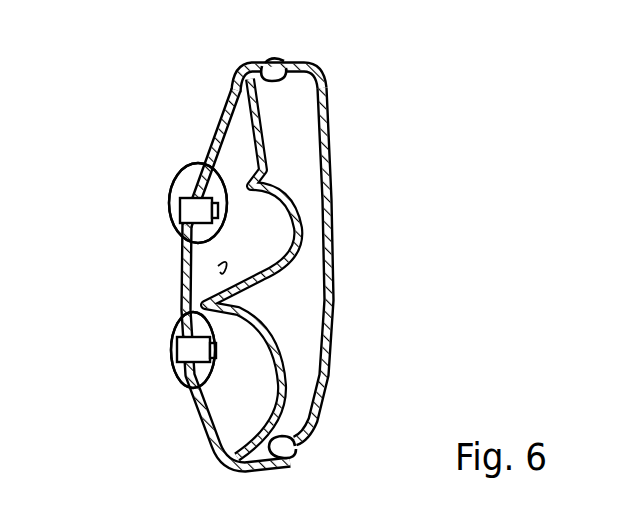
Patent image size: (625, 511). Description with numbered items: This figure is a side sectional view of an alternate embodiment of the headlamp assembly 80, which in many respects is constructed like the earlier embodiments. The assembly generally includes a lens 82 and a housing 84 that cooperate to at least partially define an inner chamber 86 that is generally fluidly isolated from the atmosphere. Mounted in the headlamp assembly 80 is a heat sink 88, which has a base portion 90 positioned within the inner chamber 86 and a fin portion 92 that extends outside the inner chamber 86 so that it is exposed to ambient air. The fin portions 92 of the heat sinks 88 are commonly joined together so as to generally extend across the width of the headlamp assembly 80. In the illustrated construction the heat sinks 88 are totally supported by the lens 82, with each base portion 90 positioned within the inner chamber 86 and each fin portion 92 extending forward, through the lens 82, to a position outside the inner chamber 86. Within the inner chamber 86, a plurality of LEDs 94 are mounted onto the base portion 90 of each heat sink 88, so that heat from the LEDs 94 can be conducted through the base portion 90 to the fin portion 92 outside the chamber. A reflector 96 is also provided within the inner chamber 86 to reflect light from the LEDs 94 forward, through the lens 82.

The headlamp assembly 80 is at (413, 215).
The lens 82 is at (224, 102).
The housing 84 is at (326, 128).
The inner chamber 86 is at (218, 266).
The heat sink 88 is at (171, 212).
The base portion 90 is at (199, 211).
The fin portion 92 is at (180, 192).
The LEDs 94 is at (214, 184).
The reflector 96 is at (285, 188).